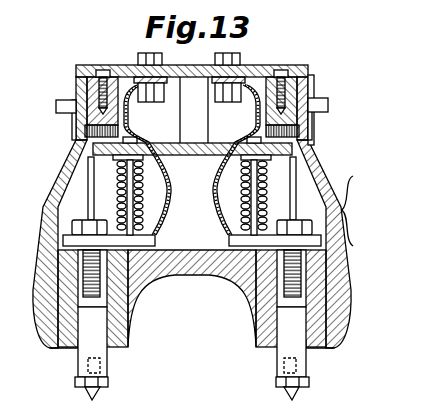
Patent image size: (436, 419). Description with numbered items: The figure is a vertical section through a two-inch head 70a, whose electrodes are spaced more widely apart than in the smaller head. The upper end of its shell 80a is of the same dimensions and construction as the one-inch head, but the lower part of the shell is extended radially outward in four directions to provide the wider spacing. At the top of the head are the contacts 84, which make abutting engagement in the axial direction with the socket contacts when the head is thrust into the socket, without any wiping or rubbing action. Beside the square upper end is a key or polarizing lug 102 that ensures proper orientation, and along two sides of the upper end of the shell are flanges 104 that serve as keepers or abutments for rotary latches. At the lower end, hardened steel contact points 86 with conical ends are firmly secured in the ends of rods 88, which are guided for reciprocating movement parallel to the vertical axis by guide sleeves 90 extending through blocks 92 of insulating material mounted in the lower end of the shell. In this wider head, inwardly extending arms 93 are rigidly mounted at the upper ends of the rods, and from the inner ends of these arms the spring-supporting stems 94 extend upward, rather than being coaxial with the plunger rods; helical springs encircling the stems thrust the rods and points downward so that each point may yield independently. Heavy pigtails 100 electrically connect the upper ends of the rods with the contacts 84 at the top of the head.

The 2" head 70a is at (370, 211).
The shell 80a is at (352, 267).
The contacts 84 is at (215, 57).
The contact points 86 is at (100, 397).
The rods 88 is at (108, 362).
The guide sleeves 90 is at (60, 296).
The blocks of insulating material 92 is at (65, 350).
The inwardly extending arms 93 is at (230, 240).
The stems 94 is at (112, 204).
The pigtails 100 is at (217, 198).
The polarizing lug 102 is at (310, 72).
The flanges 104 is at (58, 106).